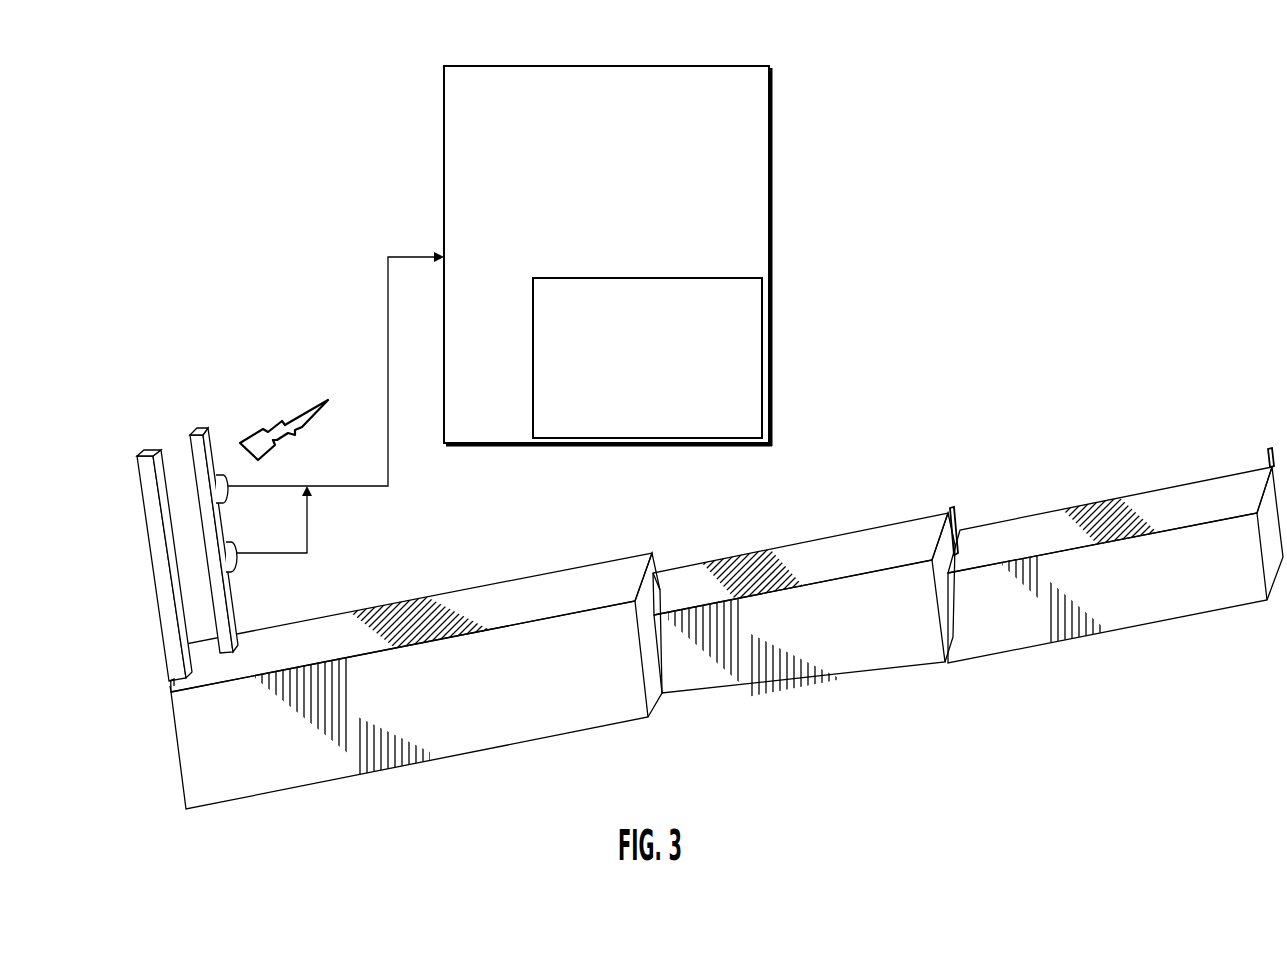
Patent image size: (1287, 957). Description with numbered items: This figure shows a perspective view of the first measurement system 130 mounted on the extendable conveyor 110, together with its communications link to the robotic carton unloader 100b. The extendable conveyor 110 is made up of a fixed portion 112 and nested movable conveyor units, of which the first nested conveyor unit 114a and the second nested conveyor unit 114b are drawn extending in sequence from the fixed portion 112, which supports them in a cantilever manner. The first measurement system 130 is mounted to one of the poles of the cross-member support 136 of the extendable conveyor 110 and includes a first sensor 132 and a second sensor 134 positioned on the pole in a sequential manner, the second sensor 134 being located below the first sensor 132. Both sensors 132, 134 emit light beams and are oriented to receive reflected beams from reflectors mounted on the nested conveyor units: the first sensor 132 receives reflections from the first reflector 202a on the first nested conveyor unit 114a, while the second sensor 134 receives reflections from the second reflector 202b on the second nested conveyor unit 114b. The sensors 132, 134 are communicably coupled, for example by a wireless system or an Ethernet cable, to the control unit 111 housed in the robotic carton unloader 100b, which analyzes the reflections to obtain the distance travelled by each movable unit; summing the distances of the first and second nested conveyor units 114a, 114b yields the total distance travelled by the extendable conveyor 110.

The robotic carton unloader 100b is at (720, 264).
The control unit 111 is at (662, 386).
The extendable conveyor 110 is at (1026, 367).
The fixed portion 112 is at (318, 768).
The first nested conveyor unit 114a is at (739, 688).
The second nested conveyor unit 114b is at (991, 641).
The first reflector 202a is at (953, 515).
The second reflector 202b is at (1268, 453).
The first measurement system 130 is at (174, 368).
The first sensor 132 is at (219, 476).
The second sensor 134 is at (228, 553).
The cross-member support 136 is at (172, 643).